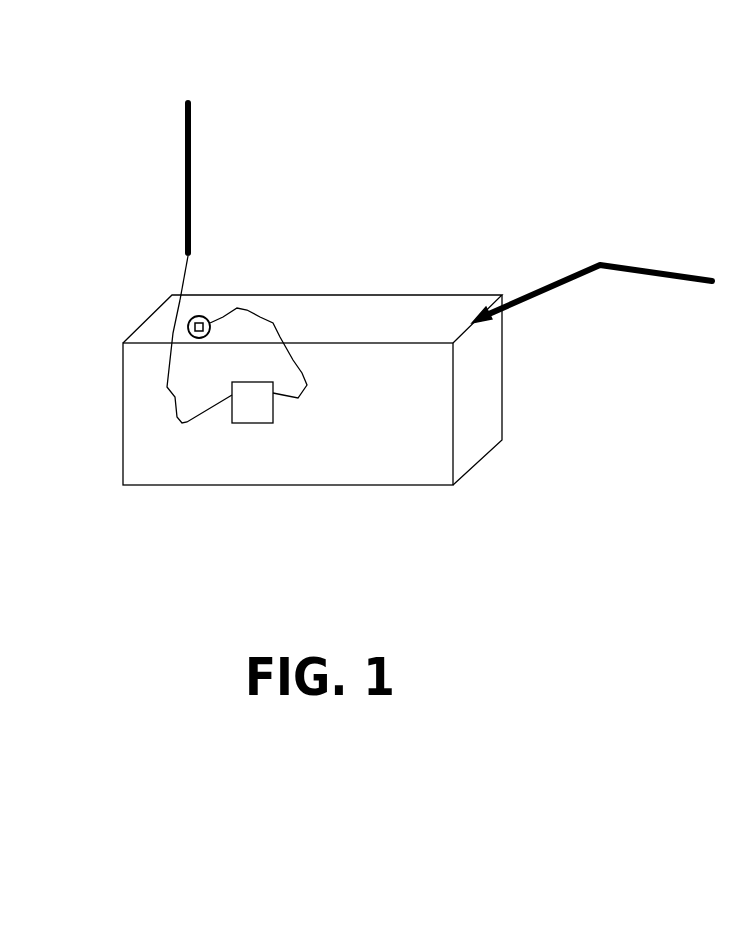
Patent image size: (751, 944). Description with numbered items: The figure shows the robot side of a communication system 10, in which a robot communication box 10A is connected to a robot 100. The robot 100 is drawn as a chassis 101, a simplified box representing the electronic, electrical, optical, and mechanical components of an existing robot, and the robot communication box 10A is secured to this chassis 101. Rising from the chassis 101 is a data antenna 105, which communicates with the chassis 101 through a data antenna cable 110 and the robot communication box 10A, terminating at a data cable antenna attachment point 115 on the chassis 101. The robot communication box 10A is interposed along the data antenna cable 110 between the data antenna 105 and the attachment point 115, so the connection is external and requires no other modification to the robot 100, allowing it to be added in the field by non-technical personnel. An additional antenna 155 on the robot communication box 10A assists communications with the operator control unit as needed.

The communication system 10 is at (462, 544).
The robot 100 is at (329, 68).
The chassis 101 is at (436, 288).
The data antenna 105 is at (184, 147).
The data antenna cable 110 is at (178, 329).
The data cable antenna attachment point 115 is at (275, 298).
The robot communication box 10A is at (255, 423).
The additional antenna 155 is at (643, 268).